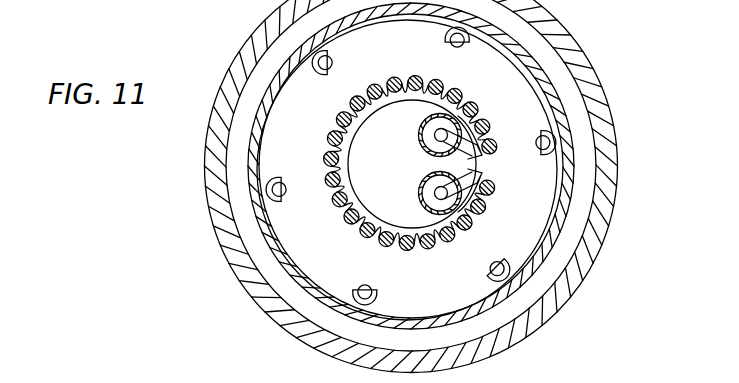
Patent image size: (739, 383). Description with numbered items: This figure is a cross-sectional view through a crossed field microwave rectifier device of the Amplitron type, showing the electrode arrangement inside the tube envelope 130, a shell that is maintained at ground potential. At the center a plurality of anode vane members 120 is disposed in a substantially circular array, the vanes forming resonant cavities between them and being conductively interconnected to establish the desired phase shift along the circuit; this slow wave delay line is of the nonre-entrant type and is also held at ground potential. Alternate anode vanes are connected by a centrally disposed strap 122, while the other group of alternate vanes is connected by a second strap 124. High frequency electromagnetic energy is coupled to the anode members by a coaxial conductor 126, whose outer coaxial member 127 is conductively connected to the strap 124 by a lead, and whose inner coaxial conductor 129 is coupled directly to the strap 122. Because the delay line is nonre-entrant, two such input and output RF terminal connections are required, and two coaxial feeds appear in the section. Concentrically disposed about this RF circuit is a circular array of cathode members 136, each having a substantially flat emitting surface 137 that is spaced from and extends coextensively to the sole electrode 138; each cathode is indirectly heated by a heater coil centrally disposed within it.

The tube envelope 130 is at (610, 101).
The sole electrode 138 is at (557, 88).
The cathode members 136 is at (437, 44).
The emitting surface 137 is at (470, 30).
The anode vane members 120 is at (483, 124).
The strap 124 is at (487, 137).
The strap 122 is at (482, 152).
The outer coaxial member 127 is at (418, 132).
The inner coaxial conductor 129 is at (417, 149).
The coaxial conductor 126 is at (417, 183).